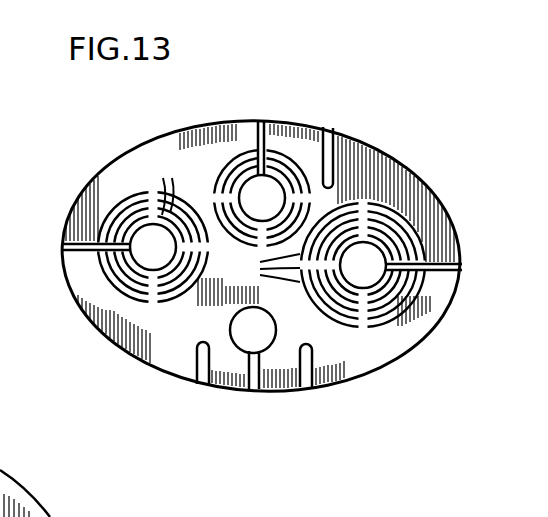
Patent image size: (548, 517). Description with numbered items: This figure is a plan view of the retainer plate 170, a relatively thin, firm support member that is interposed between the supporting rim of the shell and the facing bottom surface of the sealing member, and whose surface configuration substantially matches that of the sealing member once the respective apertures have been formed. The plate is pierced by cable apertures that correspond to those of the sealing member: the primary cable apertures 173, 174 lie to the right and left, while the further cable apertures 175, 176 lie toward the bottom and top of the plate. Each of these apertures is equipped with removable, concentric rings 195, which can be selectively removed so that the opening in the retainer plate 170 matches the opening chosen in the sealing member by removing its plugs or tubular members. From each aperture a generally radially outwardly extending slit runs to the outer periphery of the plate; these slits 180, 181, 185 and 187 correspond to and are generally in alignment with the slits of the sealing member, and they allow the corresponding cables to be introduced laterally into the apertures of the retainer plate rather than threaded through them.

The retainer plate 170 is at (120, 152).
The primary cable aperture 173 is at (393, 203).
The primary cable aperture 174 is at (112, 212).
The cable aperture 175 is at (230, 330).
The cable aperture 176 is at (290, 151).
The slit 180 is at (62, 247).
The slit 181 is at (462, 272).
The slit 185 is at (261, 120).
The slit 187 is at (256, 392).
The removable concentric rings 195 is at (222, 219).